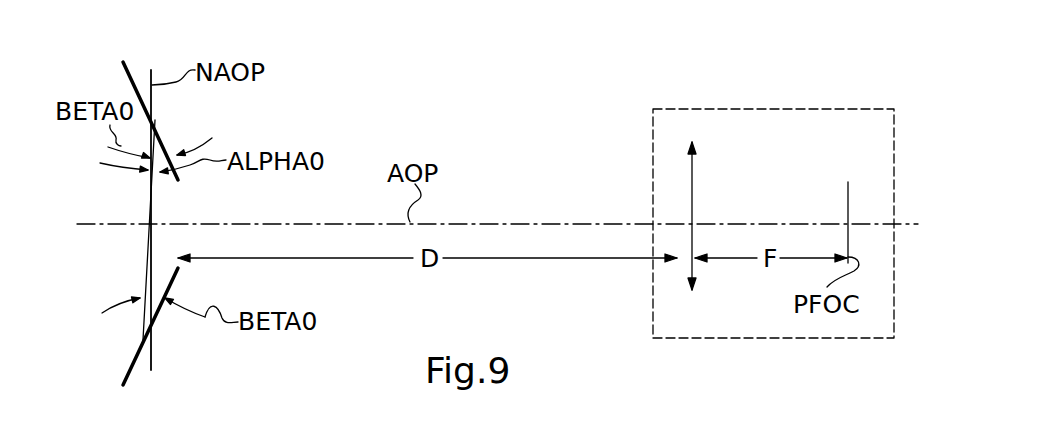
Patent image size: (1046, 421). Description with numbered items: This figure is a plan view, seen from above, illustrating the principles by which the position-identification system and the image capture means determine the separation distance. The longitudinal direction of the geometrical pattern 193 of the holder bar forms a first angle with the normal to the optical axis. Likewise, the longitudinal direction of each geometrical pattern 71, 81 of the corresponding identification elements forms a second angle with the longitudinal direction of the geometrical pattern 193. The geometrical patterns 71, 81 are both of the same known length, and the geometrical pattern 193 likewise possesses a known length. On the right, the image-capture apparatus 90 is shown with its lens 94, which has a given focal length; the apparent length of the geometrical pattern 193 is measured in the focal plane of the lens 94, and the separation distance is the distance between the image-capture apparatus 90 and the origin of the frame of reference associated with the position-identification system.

The geometrical pattern 81 is at (123, 62).
The geometrical pattern 71 is at (123, 385).
The geometrical pattern of the holder bar 193 is at (155, 184).
The image-capture apparatus 90 is at (653, 133).
The lens 94 is at (692, 262).